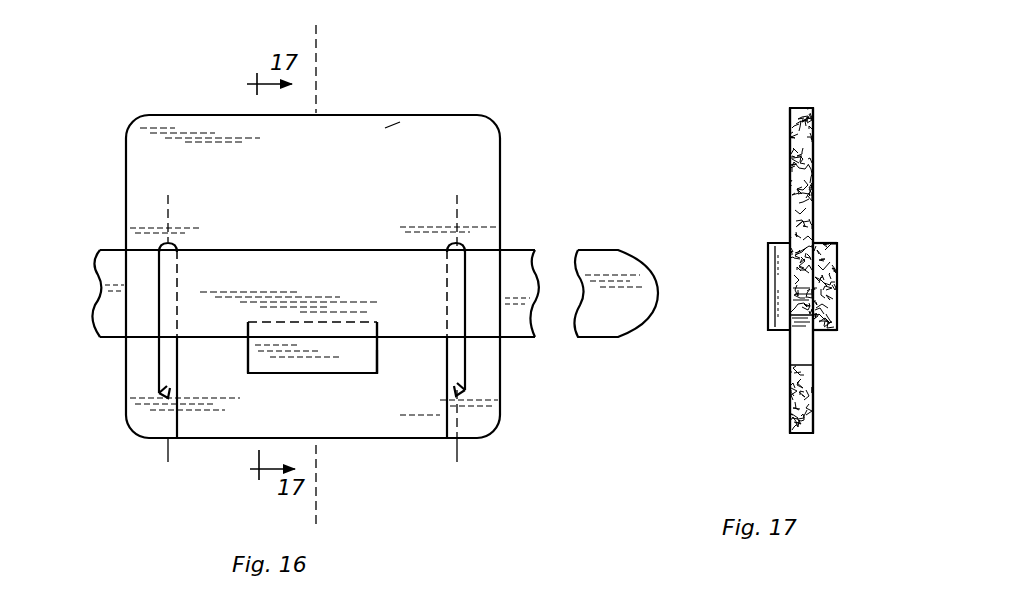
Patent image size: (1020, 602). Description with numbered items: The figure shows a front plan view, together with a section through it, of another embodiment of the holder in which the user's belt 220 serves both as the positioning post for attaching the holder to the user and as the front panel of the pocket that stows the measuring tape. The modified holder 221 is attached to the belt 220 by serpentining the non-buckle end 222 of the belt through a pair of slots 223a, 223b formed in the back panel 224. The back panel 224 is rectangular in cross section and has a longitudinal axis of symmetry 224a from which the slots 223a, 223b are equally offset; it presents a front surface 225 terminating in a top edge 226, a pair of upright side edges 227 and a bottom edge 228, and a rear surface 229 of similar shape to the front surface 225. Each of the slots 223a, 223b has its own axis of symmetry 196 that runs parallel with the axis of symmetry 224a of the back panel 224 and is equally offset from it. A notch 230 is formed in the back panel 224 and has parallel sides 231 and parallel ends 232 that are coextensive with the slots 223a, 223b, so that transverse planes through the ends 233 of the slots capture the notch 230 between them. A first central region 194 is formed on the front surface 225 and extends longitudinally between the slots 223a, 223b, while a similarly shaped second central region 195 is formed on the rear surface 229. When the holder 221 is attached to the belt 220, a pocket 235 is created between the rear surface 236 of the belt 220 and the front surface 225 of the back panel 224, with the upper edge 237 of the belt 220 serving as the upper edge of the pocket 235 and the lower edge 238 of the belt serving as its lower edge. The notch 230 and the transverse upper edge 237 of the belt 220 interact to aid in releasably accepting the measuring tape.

In FIG. 16, the first central region 194 is at (281, 268).
In FIG. 17, the first central region 194 is at (817, 295).
In FIG. 17, the second central region 195 is at (788, 288).
In FIG. 16, the axis of symmetry 196 is at (162, 453).
In FIG. 16, the user's belt 220 is at (115, 230).
In FIG. 16, the modified holder 221 is at (153, 98).
In FIG. 16, the non-buckle end 222 is at (620, 250).
In FIG. 16, the slot 223a is at (166, 388).
In FIG. 16, the slot 223b is at (464, 389).
In FIG. 16, the back panel 224 is at (478, 108).
In FIG. 17, the back panel 224 is at (813, 108).
In FIG. 16, the longitudinal axis of symmetry 224a is at (318, 50).
In FIG. 16, the front surface 225 is at (457, 148).
In FIG. 17, the front surface 225 is at (814, 141).
In FIG. 16, the top edge 226 is at (200, 114).
In FIG. 16, the upright side edges 227 is at (124, 158).
In FIG. 16, the bottom edge 228 is at (242, 440).
In FIG. 16, the rear surface 229 is at (406, 113).
In FIG. 17, the rear surface 229 is at (789, 184).
In FIG. 16, the notch 230 is at (382, 371).
In FIG. 16, the parallel sides 231 is at (305, 376).
In FIG. 16, the parallel ends 232 is at (248, 356).
In FIG. 16, the ends 233 is at (176, 243).
In FIG. 16, the pocket 235 is at (329, 248).
In FIG. 17, the pocket 235 is at (816, 239).
In FIG. 17, the rear surface 236 is at (839, 273).
In FIG. 17, the upper edge 237 is at (836, 243).
In FIG. 17, the lower edge 238 is at (826, 332).